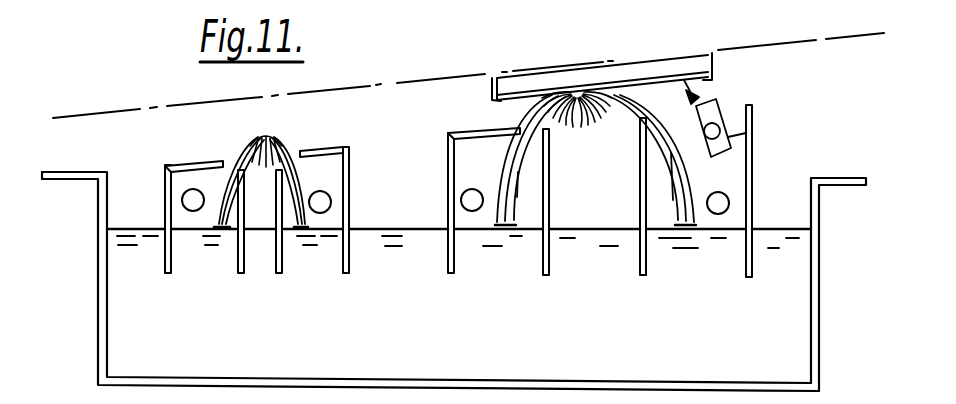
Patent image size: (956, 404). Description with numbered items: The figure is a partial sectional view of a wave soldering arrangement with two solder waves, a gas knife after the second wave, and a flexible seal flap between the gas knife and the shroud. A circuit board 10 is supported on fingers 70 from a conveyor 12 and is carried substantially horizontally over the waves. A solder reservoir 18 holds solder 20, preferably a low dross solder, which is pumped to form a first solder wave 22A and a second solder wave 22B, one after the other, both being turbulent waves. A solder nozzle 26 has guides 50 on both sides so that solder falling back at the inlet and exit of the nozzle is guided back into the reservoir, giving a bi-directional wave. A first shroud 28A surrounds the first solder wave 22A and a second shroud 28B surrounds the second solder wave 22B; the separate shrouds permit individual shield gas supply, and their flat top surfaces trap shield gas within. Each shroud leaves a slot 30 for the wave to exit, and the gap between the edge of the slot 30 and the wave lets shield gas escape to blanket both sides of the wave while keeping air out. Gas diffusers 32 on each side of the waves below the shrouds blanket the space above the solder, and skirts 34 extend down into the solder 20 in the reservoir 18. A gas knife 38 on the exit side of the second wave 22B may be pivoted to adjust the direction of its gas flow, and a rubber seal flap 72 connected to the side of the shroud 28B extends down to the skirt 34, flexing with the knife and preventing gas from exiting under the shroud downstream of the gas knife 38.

The circuit board 10 is at (623, 64).
The conveyor 12 is at (413, 82).
The solder reservoir 18 is at (100, 280).
The solder 20 is at (801, 322).
The first solder wave 22A is at (266, 137).
The second solder wave 22B is at (577, 97).
The solder nozzle 26 is at (238, 255).
The first shroud 28A is at (328, 140).
The second shroud 28B is at (455, 132).
The slot 30 is at (235, 155).
The gas diffuser 32 is at (190, 200).
The skirt 34 is at (165, 255).
The gas knife 38 is at (718, 118).
The guide 50 is at (518, 176).
The finger 70 is at (492, 78).
The rubber seal flap 72 is at (756, 121).